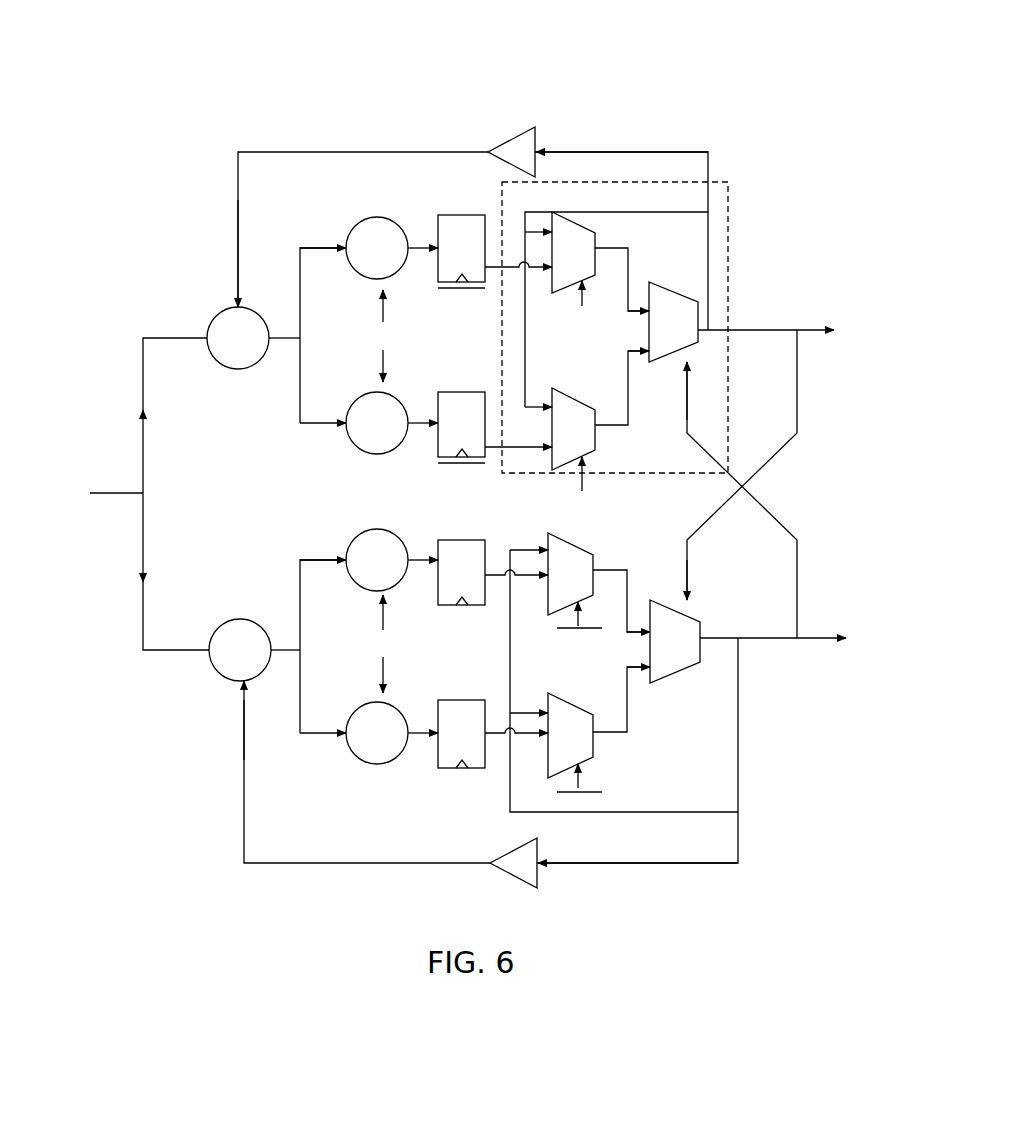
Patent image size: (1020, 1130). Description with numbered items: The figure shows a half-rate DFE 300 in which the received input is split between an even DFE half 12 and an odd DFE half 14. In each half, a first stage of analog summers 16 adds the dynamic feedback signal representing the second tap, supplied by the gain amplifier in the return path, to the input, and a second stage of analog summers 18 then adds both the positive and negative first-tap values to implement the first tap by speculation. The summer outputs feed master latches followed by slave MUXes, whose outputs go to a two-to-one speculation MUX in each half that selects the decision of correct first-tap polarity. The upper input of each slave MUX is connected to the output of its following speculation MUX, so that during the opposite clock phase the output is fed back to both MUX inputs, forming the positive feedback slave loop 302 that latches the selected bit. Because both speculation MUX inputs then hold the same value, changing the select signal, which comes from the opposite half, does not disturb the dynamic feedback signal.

The DFE 300 is at (383, 30).
The slave loop 302 is at (638, 212).
The even DFE half 12 is at (183, 328).
The odd DFE half 14 is at (207, 688).
The first stage of analog summers 16 is at (238, 371).
The second stage of analog summers 18 is at (399, 276).